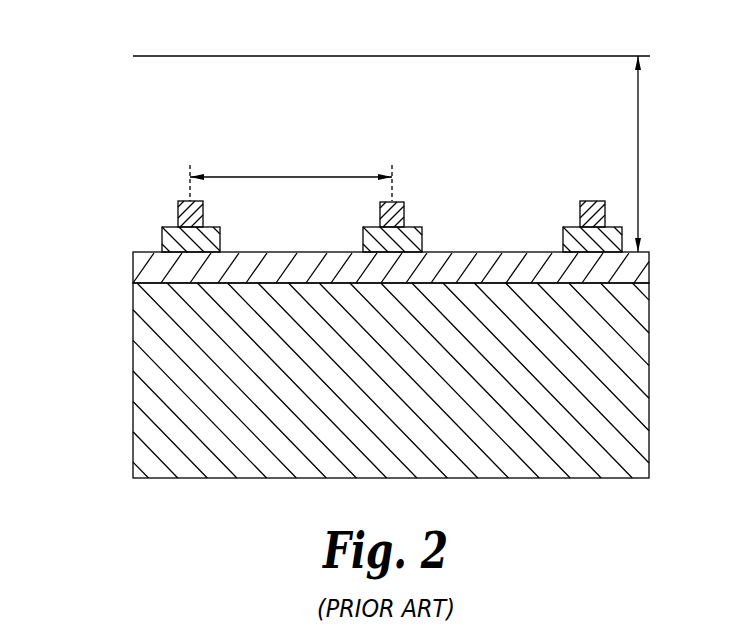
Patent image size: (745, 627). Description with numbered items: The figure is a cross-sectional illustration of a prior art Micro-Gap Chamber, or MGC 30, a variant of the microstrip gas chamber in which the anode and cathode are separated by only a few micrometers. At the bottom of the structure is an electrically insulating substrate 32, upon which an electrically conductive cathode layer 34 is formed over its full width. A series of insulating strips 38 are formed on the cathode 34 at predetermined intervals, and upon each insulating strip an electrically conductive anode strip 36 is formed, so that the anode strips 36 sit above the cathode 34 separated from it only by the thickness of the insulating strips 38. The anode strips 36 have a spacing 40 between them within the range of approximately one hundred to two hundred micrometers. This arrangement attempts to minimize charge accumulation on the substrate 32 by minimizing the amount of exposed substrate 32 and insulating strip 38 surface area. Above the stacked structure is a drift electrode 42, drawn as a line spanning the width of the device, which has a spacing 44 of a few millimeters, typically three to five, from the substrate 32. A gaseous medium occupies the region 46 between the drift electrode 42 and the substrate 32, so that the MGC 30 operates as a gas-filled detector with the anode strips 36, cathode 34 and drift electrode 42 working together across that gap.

The MGC 30 is at (93, 98).
The electrically insulating substrate 32 is at (133, 405).
The electrically conductive cathode layer 34 is at (133, 265).
The electrically conductive anode strip 36 is at (178, 213).
The insulating strip 38 is at (221, 231).
The spacing 40 is at (312, 175).
The drift electrode 42 is at (367, 56).
The spacing 44 is at (639, 152).
The gap region 46 is at (507, 112).